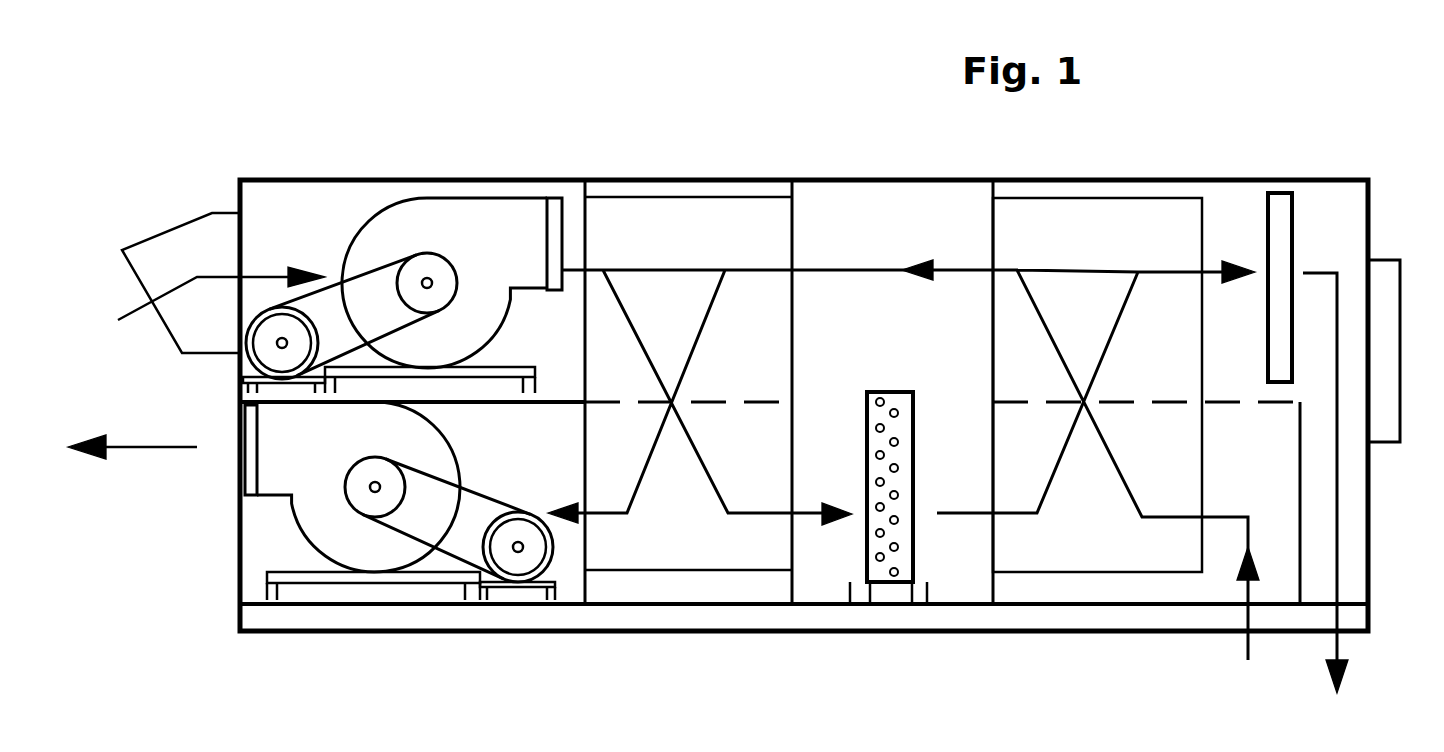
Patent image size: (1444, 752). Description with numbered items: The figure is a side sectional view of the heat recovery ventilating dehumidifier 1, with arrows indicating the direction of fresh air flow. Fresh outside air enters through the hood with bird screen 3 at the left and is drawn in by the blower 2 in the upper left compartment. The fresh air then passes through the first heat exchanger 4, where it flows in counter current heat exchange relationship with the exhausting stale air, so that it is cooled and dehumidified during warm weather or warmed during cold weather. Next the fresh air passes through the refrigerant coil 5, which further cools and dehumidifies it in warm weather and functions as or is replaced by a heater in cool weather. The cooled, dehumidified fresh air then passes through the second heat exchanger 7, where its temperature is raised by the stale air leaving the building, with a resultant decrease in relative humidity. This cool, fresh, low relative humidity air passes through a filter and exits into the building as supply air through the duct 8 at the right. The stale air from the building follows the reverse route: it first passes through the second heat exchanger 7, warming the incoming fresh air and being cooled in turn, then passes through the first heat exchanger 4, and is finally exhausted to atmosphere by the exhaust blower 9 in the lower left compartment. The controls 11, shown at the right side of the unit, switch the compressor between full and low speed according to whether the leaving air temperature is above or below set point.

The heat recovery ventilating dehumidifier 1 is at (730, 130).
The blower 2 is at (402, 295).
The hood with bird screen 3 is at (168, 222).
The first heat exchanger 4 is at (740, 392).
The refrigerant coil 5 is at (923, 470).
The second heat exchanger 7 is at (1112, 420).
The duct 8 is at (1332, 483).
The exhaust blower 9 is at (311, 501).
The controls 11 is at (1402, 245).